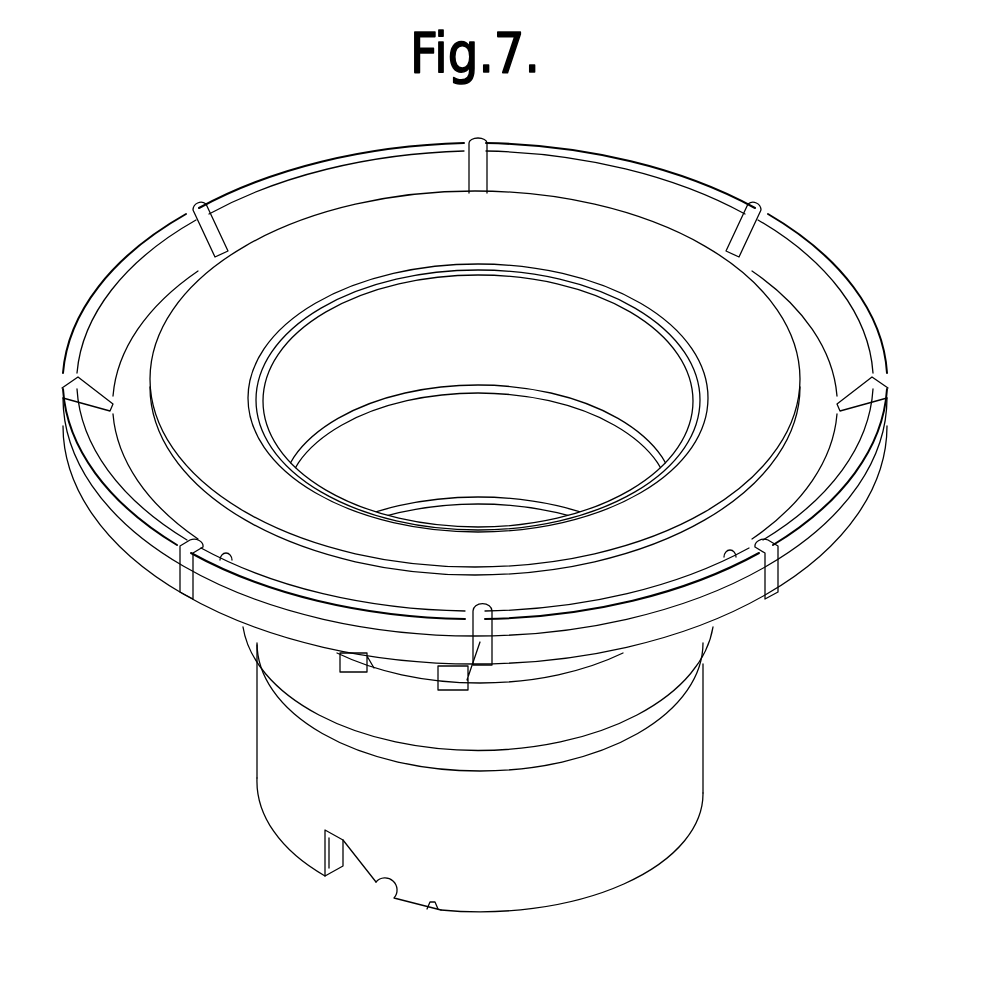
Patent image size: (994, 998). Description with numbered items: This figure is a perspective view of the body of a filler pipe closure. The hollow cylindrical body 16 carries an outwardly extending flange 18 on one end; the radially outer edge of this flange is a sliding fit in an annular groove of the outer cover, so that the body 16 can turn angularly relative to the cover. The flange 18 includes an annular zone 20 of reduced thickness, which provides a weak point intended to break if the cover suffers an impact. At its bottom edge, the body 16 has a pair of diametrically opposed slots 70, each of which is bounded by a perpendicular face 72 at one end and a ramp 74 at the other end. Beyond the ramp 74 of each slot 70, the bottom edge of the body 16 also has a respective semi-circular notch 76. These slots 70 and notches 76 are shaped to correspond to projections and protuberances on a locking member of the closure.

The hollow cylindrical body 16 is at (673, 760).
The flange 18 is at (170, 363).
The annular zone of reduced thickness 20 is at (810, 300).
The slot 70 is at (352, 873).
The perpendicular face 72 is at (323, 852).
The ramp 74 is at (396, 902).
The semi-circular notch 76 is at (433, 912).